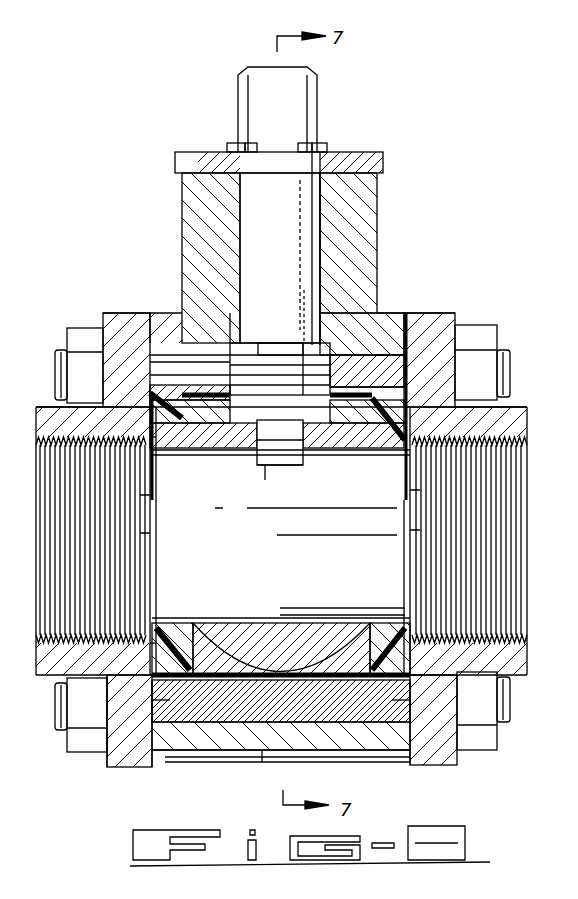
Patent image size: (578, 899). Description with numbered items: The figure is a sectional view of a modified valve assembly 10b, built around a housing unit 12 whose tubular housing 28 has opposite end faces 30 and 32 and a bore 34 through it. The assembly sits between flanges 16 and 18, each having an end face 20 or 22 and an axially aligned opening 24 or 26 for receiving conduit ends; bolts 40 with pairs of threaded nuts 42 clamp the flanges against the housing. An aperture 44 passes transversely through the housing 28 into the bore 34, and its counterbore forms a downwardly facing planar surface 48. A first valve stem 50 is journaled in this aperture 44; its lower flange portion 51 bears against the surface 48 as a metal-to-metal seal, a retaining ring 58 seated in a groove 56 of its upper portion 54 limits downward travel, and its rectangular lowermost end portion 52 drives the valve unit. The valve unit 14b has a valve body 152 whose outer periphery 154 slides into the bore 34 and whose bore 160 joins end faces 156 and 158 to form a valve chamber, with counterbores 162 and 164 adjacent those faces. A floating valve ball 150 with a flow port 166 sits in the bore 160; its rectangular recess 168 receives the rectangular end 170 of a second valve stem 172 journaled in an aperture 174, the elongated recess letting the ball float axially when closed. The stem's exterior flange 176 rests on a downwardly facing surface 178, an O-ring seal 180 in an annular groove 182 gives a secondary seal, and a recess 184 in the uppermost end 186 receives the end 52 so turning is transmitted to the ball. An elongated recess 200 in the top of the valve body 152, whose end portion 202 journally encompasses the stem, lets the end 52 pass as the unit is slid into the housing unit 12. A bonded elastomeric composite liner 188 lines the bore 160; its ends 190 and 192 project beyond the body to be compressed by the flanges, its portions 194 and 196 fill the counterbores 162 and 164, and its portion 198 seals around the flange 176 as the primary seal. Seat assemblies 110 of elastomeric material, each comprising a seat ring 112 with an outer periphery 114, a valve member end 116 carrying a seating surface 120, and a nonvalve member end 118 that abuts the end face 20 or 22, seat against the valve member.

The valve assembly 10b is at (355, 126).
The upper portion 54 is at (298, 92).
The retaining ring 58 is at (238, 143).
The groove 56 is at (254, 143).
The housing unit 12 is at (396, 178).
The first valve stem 50 is at (246, 191).
The tubular housing 28 is at (355, 241).
The aperture 44 is at (314, 201).
The annular groove 182 is at (303, 330).
The uppermost end 186 is at (262, 343).
The valve unit 14b is at (385, 340).
The downwardly facing planar surface 48 is at (240, 326).
The lower flange portion 51 is at (285, 362).
The recess 184 is at (310, 348).
The O-ring seal 180 is at (220, 364).
The elongated recess 200 is at (166, 360).
The end portion 202 is at (396, 362).
The second valve stem 172 is at (367, 371).
The aperture 174 is at (400, 380).
The outer periphery 114 is at (160, 379).
The end 190 is at (150, 410).
The end 192 is at (414, 412).
The exterior flange 176 is at (277, 435).
The lowermost end portion 52 is at (280, 442).
The portion 198 is at (212, 452).
The downwardly facing surface 178 is at (218, 470).
The rectangular recess 168 is at (268, 470).
The rectangular end 170 is at (276, 468).
The seating surface 120 is at (375, 460).
The seat ring 112 is at (410, 450).
The seat assembly 110 is at (165, 608).
The opening 24 is at (42, 469).
The opening 26 is at (520, 628).
The nonvalve member end 118 is at (150, 456).
The valve member end 116 is at (150, 476).
The bolts 40 is at (55, 372).
The threaded nuts 42 is at (78, 350).
The valve ball 150 is at (268, 620).
The flow port 166 is at (300, 622).
The composite liner 188 is at (350, 666).
The portion 194 is at (150, 676).
The portion 196 is at (416, 672).
The end face 158 is at (420, 712).
The bore 160 is at (246, 770).
The counterbore 162 is at (160, 708).
The counterbore 164 is at (400, 700).
The valve body 152 is at (290, 722).
The end face 32 is at (410, 741).
The end face 156 is at (158, 710).
The end face 30 is at (152, 740).
The flange 16 is at (112, 766).
The flange 18 is at (444, 766).
The end face 20 is at (164, 772).
The end face 22 is at (396, 768).
The outer periphery 154 is at (222, 765).
The bore 34 is at (264, 758).